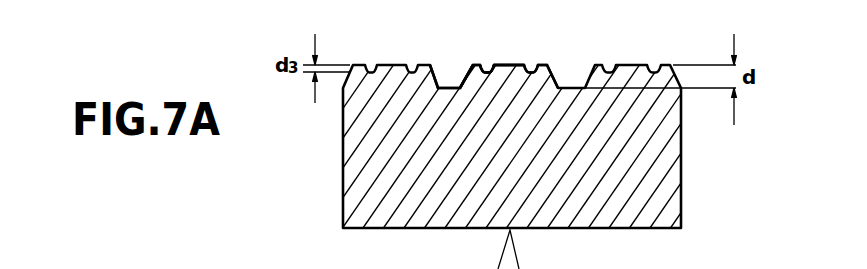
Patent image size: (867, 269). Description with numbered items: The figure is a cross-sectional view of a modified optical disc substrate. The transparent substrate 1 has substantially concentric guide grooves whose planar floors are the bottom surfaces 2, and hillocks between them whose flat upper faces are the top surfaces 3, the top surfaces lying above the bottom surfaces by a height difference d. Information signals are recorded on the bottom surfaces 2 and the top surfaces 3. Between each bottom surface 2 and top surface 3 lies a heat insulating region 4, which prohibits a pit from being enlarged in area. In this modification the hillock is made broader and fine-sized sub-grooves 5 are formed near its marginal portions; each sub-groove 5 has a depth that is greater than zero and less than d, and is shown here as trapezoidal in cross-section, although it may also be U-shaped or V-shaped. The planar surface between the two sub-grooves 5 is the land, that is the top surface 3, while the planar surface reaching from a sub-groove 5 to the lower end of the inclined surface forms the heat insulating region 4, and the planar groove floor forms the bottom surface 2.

The transparent substrate 1 is at (660, 195).
The bottom surface 2 is at (450, 87).
The top surface 3 is at (516, 66).
The heat insulating region 4 is at (464, 87).
The sub-groove 5 is at (491, 67).